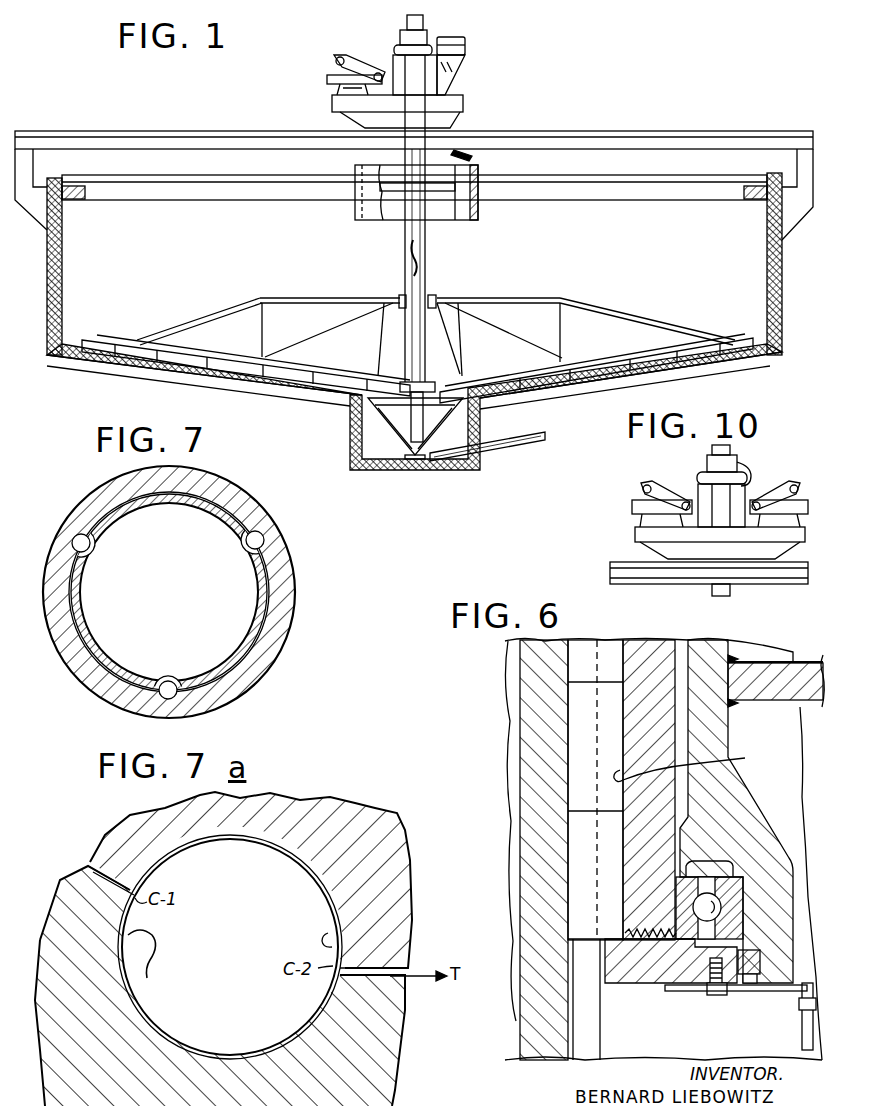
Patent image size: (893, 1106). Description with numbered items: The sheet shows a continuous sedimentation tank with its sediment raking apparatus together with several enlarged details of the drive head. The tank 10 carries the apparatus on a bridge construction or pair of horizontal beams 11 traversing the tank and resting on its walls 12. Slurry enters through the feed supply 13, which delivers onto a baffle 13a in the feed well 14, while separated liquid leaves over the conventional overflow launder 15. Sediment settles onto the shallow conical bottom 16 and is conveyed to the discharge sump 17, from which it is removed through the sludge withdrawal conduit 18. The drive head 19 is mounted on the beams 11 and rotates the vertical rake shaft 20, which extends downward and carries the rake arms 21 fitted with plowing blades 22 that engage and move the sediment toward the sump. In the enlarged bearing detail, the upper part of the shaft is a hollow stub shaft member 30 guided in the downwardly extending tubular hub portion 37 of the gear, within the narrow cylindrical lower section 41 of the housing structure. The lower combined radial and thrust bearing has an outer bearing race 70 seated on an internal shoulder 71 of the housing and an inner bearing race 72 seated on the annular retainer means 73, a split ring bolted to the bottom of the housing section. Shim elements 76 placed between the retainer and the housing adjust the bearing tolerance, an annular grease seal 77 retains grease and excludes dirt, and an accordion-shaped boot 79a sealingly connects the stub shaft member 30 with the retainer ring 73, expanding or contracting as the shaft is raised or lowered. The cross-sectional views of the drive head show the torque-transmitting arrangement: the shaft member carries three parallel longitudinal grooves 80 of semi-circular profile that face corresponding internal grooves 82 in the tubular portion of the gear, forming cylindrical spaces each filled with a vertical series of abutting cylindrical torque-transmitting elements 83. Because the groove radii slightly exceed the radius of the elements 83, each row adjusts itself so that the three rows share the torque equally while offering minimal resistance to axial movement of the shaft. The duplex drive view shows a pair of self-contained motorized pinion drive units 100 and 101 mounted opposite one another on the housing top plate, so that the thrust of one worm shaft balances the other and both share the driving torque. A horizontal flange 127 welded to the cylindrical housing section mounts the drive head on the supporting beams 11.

In FIG. 1, the tank 10 is at (36, 360).
In FIG. 1, the horizontal beams 11 is at (581, 131).
In FIG. 1, the walls 12 is at (66, 284).
In FIG. 1, the feed supply 13 is at (440, 175).
In FIG. 1, the baffle 13a is at (425, 215).
In FIG. 1, the feed well 14 is at (478, 210).
In FIG. 1, the overflow launder 15 is at (78, 182).
In FIG. 1, the conical bottom 16 is at (248, 399).
In FIG. 1, the discharge sump 17 is at (373, 440).
In FIG. 1, the sludge withdrawal conduit 18 is at (500, 449).
In FIG. 1, the drive head 19 is at (465, 86).
In FIG. 1, the vertical rake shaft 20 is at (404, 246).
In FIG. 1, the rake arms 21 is at (702, 339).
In FIG. 1, the plowing blades 22 is at (612, 363).
In FIG. 7, the hollow stub shaft member 30 is at (256, 586).
In FIG. 6, the hollow stub shaft member 30 is at (533, 818).
In FIG. 7a, the hollow stub shaft member 30 is at (400, 945).
In FIG. 7, the tubular hub portion 37 is at (284, 575).
In FIG. 6, the tubular hub portion 37 is at (650, 650).
In FIG. 7a, the tubular hub portion 37 is at (395, 1012).
In FIG. 6, the lower cylindrical section 41 is at (740, 803).
In FIG. 6, the outer bearing race 70 is at (738, 900).
In FIG. 6, the internal shoulder 71 is at (737, 864).
In FIG. 6, the inner bearing race 72 is at (680, 910).
In FIG. 6, the annular retainer means 73 is at (698, 965).
In FIG. 6, the shim elements 76 is at (624, 935).
In FIG. 6, the annular grease seal 77 is at (756, 983).
In FIG. 6, the accordion-shaped boot 79a is at (802, 1040).
In FIG. 6, the longitudinal grooves 80 is at (583, 1023).
In FIG. 7a, the longitudinal grooves 80 is at (340, 920).
In FIG. 6, the grooves 82 is at (691, 766).
In FIG. 7a, the grooves 82 is at (230, 961).
In FIG. 7, the cylindrical torque-transmitting elements 83 is at (79, 538).
In FIG. 6, the cylindrical torque-transmitting elements 83 is at (578, 826).
In FIG. 7a, the cylindrical torque-transmitting elements 83 is at (230, 947).
In FIG. 10, the motorized pinion drive unit 100 is at (608, 500).
In FIG. 10, the motorized pinion drive unit 101 is at (785, 480).
In FIG. 6, the flange 127 is at (806, 657).